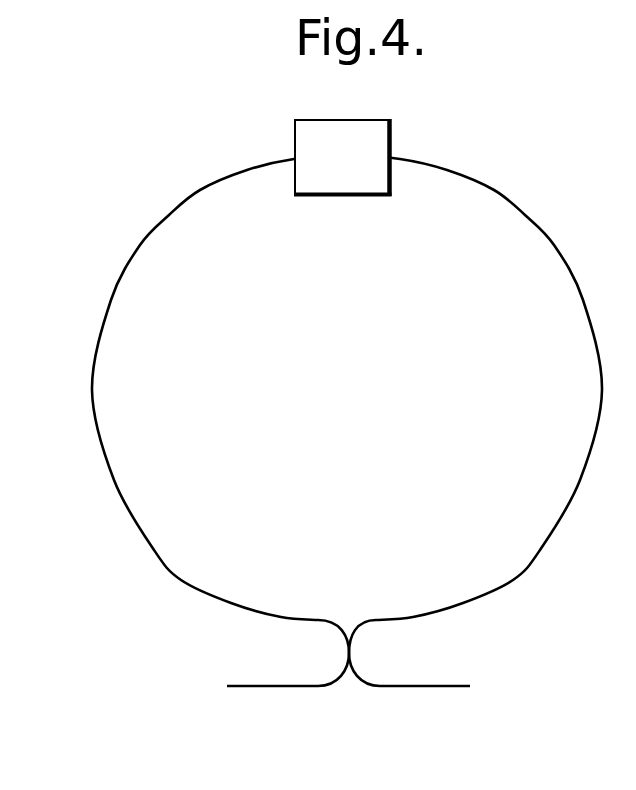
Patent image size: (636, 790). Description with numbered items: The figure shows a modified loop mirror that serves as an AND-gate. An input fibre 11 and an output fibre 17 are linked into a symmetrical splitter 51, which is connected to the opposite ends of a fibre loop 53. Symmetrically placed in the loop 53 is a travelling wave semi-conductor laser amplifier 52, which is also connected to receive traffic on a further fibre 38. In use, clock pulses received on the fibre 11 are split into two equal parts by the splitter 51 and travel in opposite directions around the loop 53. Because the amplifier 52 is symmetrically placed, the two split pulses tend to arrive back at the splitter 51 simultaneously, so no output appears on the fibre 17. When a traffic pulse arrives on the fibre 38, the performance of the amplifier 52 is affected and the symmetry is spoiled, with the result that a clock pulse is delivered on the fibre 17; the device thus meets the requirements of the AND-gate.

The fibre 38 is at (293, 143).
The travelling wave semi-conductor laser amplifier 52 is at (356, 156).
The fibre loop 53 is at (143, 535).
The symmetrical splitter 51 is at (351, 651).
The fibre 11 is at (280, 687).
The fibre 17 is at (435, 687).